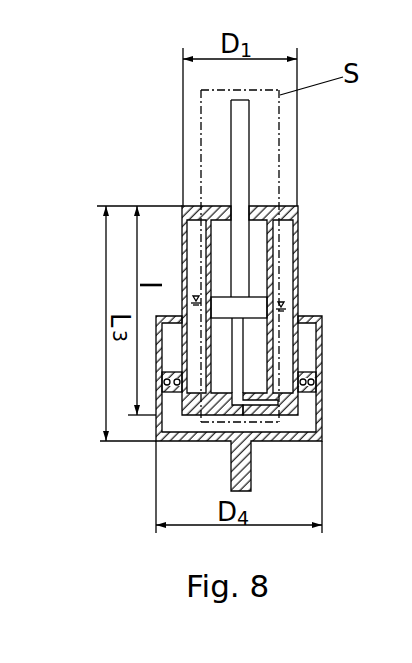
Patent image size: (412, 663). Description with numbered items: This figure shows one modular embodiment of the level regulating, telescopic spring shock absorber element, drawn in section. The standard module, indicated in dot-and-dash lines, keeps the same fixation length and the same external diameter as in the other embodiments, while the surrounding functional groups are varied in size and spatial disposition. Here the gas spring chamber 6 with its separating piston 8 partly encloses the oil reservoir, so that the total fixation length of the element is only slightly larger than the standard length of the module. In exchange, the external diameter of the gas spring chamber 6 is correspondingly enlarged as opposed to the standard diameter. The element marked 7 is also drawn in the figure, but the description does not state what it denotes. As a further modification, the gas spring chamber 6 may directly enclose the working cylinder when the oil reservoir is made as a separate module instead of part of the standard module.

The cylinder 7 is at (302, 335).
The gas spring chamber 6 is at (381, 333).
The separating piston 8 is at (302, 404).